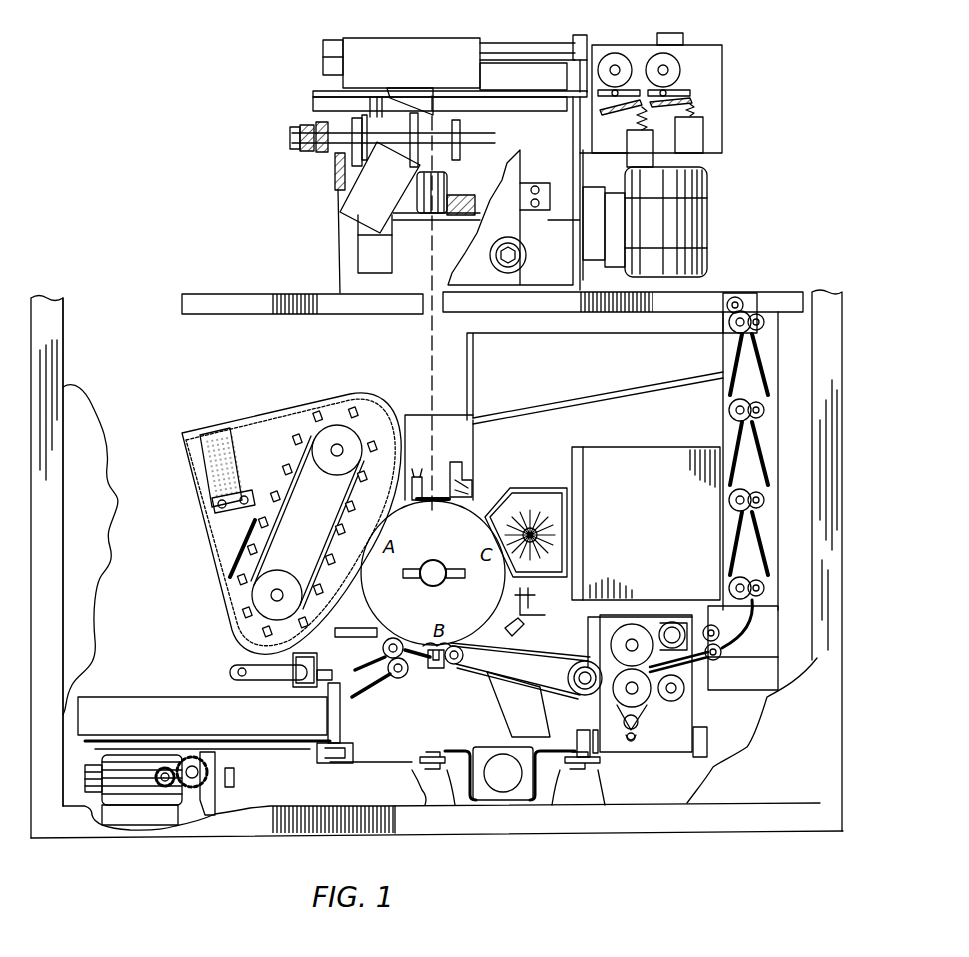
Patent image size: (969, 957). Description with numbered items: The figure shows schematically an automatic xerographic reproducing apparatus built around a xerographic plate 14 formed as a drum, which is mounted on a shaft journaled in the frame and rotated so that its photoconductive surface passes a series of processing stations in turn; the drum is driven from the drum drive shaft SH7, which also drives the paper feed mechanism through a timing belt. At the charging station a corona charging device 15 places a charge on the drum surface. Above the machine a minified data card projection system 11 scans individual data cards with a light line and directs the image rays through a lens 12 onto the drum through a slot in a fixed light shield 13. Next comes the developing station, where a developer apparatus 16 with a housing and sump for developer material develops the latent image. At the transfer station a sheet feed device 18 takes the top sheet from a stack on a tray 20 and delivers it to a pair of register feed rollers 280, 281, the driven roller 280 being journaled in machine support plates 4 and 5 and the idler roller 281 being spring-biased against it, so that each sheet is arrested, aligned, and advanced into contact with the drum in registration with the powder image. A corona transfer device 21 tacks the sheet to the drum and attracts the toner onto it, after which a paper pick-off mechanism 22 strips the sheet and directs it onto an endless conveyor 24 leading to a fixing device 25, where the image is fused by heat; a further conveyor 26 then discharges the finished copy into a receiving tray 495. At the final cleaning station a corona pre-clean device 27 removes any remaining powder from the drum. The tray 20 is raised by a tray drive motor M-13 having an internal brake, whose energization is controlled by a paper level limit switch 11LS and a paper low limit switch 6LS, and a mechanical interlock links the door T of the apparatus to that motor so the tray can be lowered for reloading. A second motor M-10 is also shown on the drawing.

The minified data card projection system 11 is at (380, 27).
The lens 12 is at (428, 203).
The motor M-10 is at (707, 221).
The door T is at (63, 330).
The machine support plate 5 is at (80, 406).
The machine support plate 4 is at (785, 803).
The developer apparatus 16 is at (235, 420).
The receiving tray 495 is at (578, 403).
The corona charging device 15 is at (458, 478).
The xerographic plate 14 is at (480, 512).
The fixed light shield 13 is at (428, 503).
The drum drive shaft SH7 is at (440, 582).
The conveyor 26 is at (770, 524).
The corona pre-clean device 27 is at (545, 612).
The paper pick-off mechanism 22 is at (524, 636).
The register feed roller 280 is at (394, 638).
The register feed roller 281 is at (404, 678).
The corona transfer device 21 is at (436, 672).
The endless conveyor 24 is at (548, 692).
The sheet feed device 18 is at (165, 688).
The tray 20 is at (92, 699).
The paper level limit switch 11LS is at (303, 680).
The tray drive motor M-13 is at (145, 760).
The paper low limit switch 6LS is at (235, 778).
The fixing device 25 is at (703, 697).